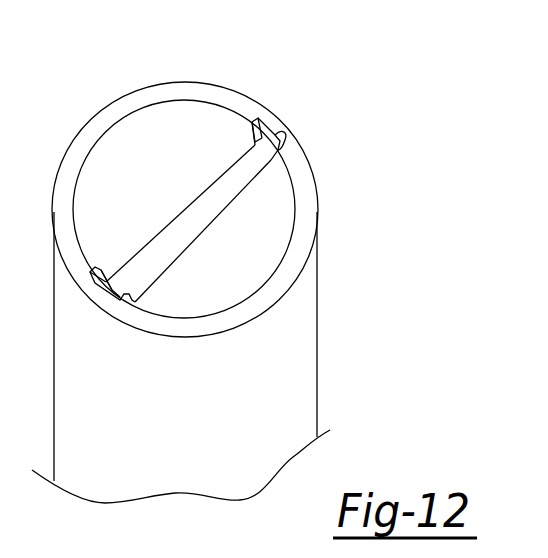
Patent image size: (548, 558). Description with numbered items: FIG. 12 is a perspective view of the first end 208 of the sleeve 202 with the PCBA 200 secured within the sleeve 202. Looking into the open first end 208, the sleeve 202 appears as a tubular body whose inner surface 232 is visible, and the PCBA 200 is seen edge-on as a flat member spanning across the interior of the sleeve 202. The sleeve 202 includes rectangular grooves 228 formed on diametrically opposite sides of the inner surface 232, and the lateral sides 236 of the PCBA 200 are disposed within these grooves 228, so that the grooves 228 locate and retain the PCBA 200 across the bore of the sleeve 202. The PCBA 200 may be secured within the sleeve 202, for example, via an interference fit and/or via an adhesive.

The PCBA 200 is at (200, 225).
The sleeve 202 is at (184, 90).
The first end 208 is at (250, 311).
The rectangular grooves 228 is at (276, 270).
The inner surface 232 is at (98, 200).
The lateral sides 236 is at (276, 128).